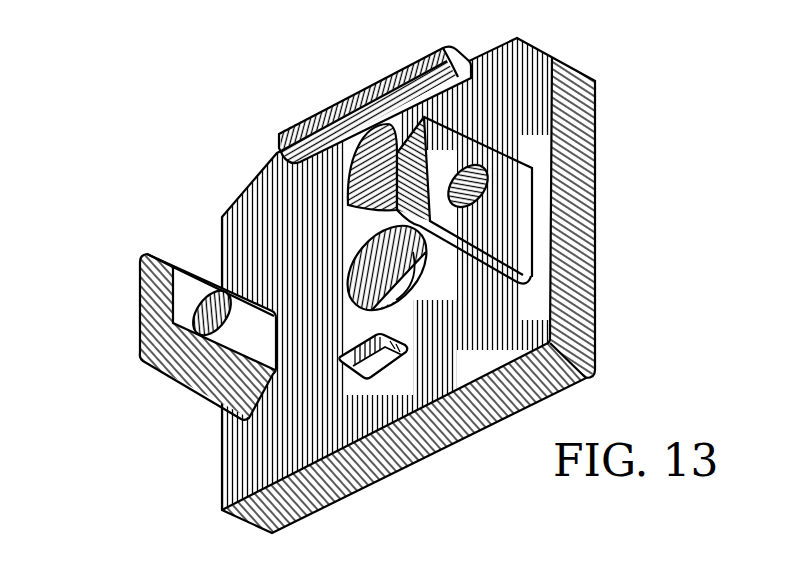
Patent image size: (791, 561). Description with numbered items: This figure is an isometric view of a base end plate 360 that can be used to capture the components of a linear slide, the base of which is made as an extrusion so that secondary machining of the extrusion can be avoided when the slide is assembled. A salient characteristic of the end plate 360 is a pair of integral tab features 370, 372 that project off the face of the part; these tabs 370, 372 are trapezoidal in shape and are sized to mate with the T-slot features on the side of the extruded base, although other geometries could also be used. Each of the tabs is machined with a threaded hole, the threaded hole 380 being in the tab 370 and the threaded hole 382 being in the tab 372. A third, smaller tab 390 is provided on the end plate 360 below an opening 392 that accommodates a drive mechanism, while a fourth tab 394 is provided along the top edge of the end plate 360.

The base end plate 360 is at (505, 327).
The integral tab 370 is at (180, 298).
The integral tab 372 is at (505, 223).
The threaded hole 380 is at (210, 299).
The threaded hole 382 is at (475, 188).
The third smaller tab 390 is at (378, 362).
The opening 392 is at (365, 258).
The fourth tab 394 is at (357, 108).